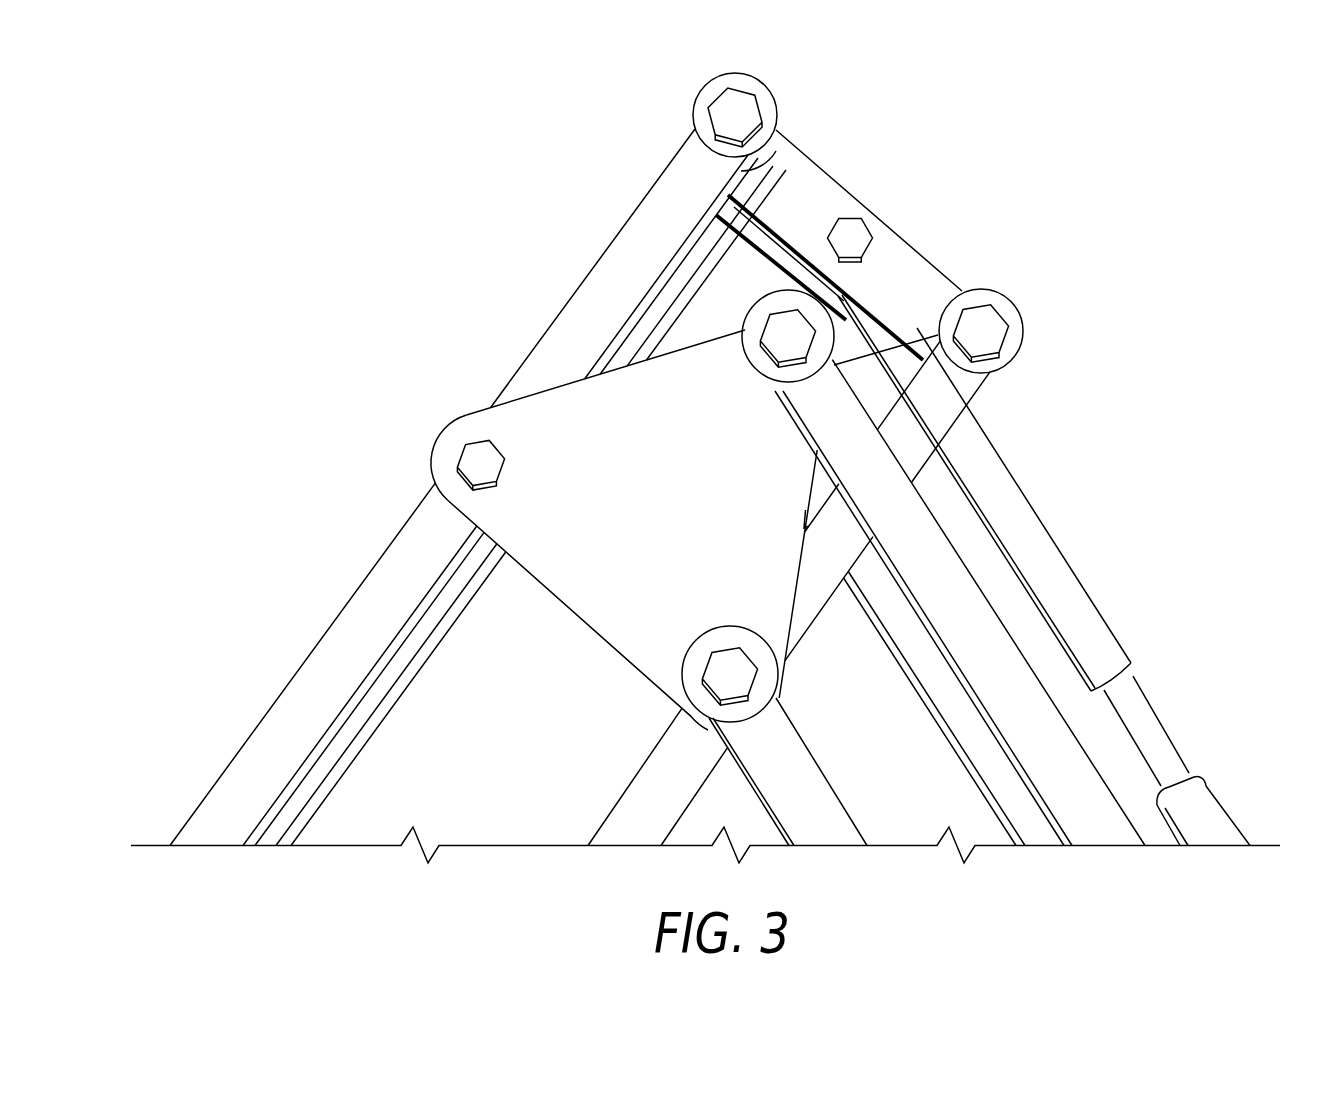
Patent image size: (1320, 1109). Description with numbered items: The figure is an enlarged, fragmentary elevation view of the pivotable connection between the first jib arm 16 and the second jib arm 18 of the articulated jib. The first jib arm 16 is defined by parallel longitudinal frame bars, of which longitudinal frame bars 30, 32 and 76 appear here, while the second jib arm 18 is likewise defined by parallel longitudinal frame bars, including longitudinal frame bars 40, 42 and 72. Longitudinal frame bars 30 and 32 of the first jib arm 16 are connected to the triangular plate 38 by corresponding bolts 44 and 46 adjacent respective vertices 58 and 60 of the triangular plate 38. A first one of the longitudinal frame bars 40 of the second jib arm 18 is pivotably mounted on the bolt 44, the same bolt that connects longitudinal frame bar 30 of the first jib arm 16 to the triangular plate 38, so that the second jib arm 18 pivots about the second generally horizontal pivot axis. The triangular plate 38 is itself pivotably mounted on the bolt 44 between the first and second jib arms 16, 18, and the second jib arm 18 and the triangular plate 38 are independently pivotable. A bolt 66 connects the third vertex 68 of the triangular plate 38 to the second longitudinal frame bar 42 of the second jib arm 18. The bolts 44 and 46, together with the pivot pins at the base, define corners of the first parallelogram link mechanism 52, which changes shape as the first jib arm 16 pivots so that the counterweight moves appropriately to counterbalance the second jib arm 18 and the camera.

The first jib arm 16 is at (1090, 765).
The second jib arm 18 is at (478, 487).
The longitudinal frame bar 30 is at (790, 790).
The longitudinal frame bar 32 is at (970, 630).
The triangular plate 38 is at (575, 526).
The longitudinal frame bar 40 is at (651, 788).
The longitudinal frame bar 42 is at (593, 305).
The bolt 44 is at (716, 658).
The bolt 46 is at (783, 322).
The first parallelogram link mechanism 52 is at (1128, 705).
The vertex 58 is at (768, 687).
The vertex 60 is at (733, 340).
The bolt 66 is at (470, 455).
The third vertex 68 is at (480, 400).
The longitudinal frame bar 72 is at (683, 262).
The longitudinal frame bar 76 is at (876, 583).